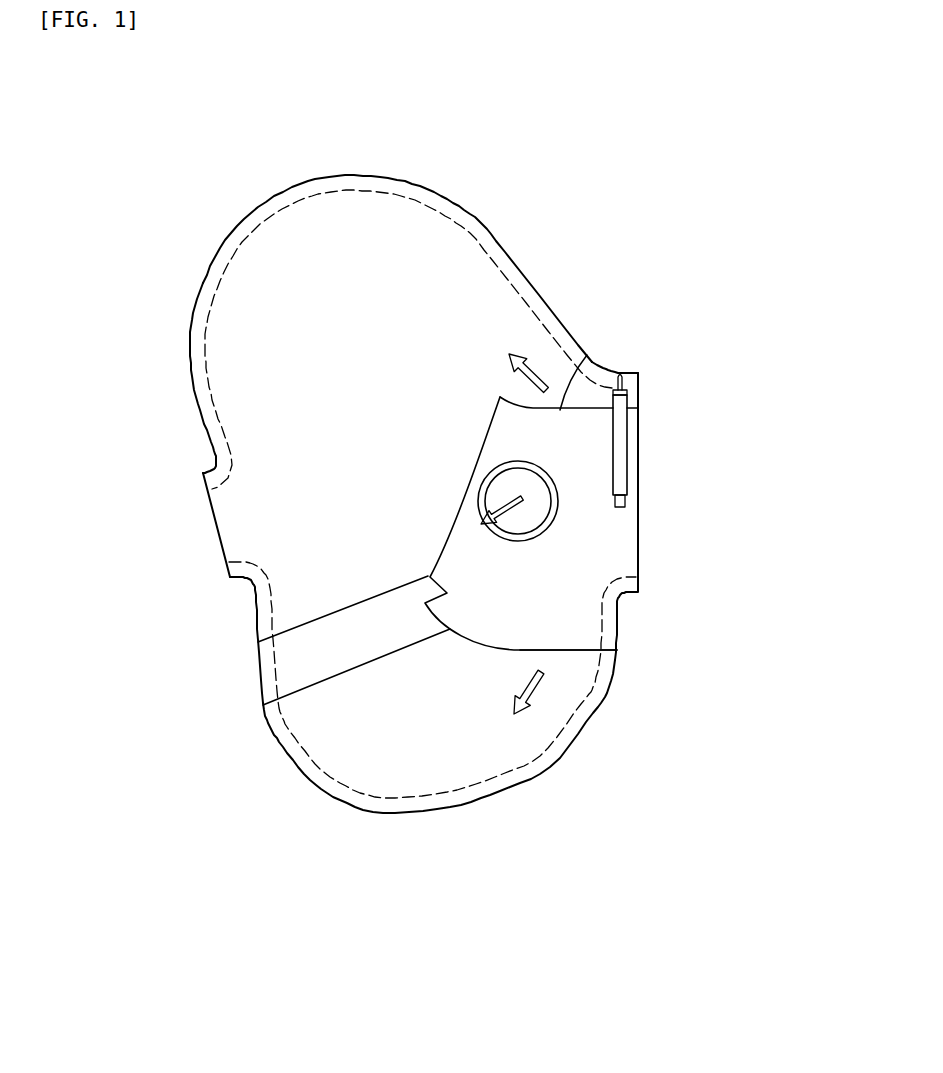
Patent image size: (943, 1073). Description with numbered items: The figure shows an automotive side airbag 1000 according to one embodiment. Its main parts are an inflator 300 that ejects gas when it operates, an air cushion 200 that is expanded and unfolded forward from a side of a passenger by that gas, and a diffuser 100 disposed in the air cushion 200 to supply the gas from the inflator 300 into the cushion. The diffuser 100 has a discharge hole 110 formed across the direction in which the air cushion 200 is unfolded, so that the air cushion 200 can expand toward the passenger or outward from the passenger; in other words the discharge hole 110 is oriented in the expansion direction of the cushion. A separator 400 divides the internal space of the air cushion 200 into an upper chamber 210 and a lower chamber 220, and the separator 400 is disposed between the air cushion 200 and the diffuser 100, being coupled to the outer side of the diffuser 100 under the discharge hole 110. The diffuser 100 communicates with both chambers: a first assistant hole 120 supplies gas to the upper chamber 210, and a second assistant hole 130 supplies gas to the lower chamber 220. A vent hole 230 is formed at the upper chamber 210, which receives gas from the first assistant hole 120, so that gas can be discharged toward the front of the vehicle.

The automotive side airbag 1000 is at (472, 159).
The diffuser 100 is at (573, 468).
The discharge hole 110 is at (537, 498).
The first assistant hole 120 is at (587, 355).
The second assistant hole 130 is at (553, 651).
The air cushion 200 is at (222, 253).
The upper chamber 210 is at (327, 252).
The lower chamber 220 is at (436, 762).
The vent hole 230 is at (235, 513).
The inflator 300 is at (618, 430).
The separator 400 is at (305, 690).